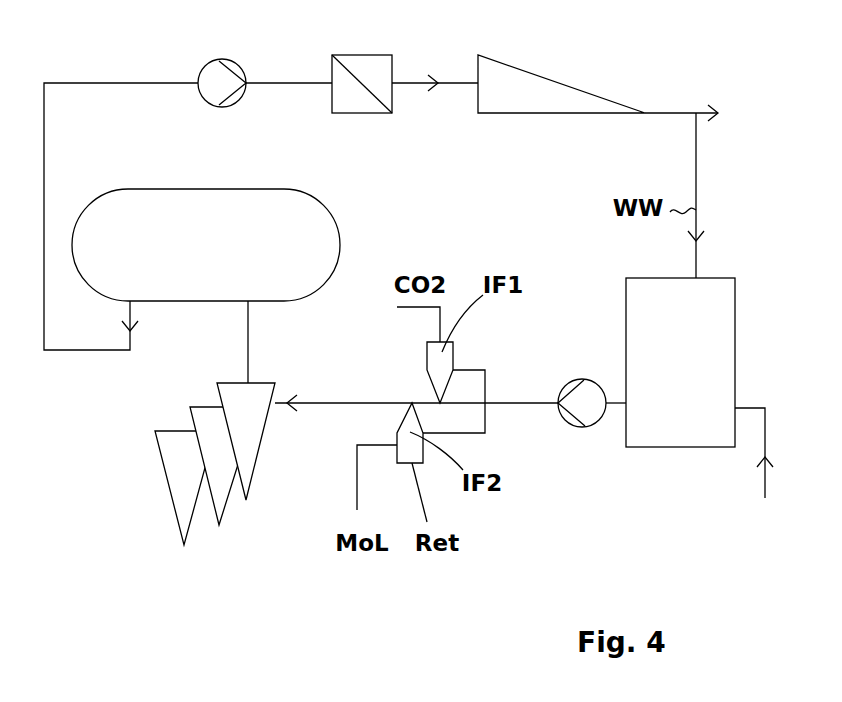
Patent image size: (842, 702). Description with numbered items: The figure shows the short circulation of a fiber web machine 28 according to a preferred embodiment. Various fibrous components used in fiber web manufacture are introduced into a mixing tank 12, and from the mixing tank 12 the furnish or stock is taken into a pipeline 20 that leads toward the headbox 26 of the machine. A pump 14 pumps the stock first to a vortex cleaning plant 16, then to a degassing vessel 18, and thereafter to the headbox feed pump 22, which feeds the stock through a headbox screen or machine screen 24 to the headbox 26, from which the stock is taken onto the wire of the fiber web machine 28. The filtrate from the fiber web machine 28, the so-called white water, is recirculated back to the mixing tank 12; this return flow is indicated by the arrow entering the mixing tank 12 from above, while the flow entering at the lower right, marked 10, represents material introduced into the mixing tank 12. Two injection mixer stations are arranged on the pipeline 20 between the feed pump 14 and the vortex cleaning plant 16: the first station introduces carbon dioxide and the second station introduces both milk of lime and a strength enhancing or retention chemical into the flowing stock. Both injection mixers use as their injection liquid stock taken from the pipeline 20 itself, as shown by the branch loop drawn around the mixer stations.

The inlet line 10 is at (765, 478).
The mixing tank 12 is at (653, 365).
The pump 14 is at (563, 393).
The vortex cleaning plant 16 is at (190, 490).
The degassing vessel 18 is at (312, 228).
The pipeline 20 is at (82, 350).
The headbox feed pump 22 is at (223, 107).
The headbox screen 24 is at (335, 95).
The headbox 26 is at (482, 100).
The fiber web machine 28 is at (677, 114).